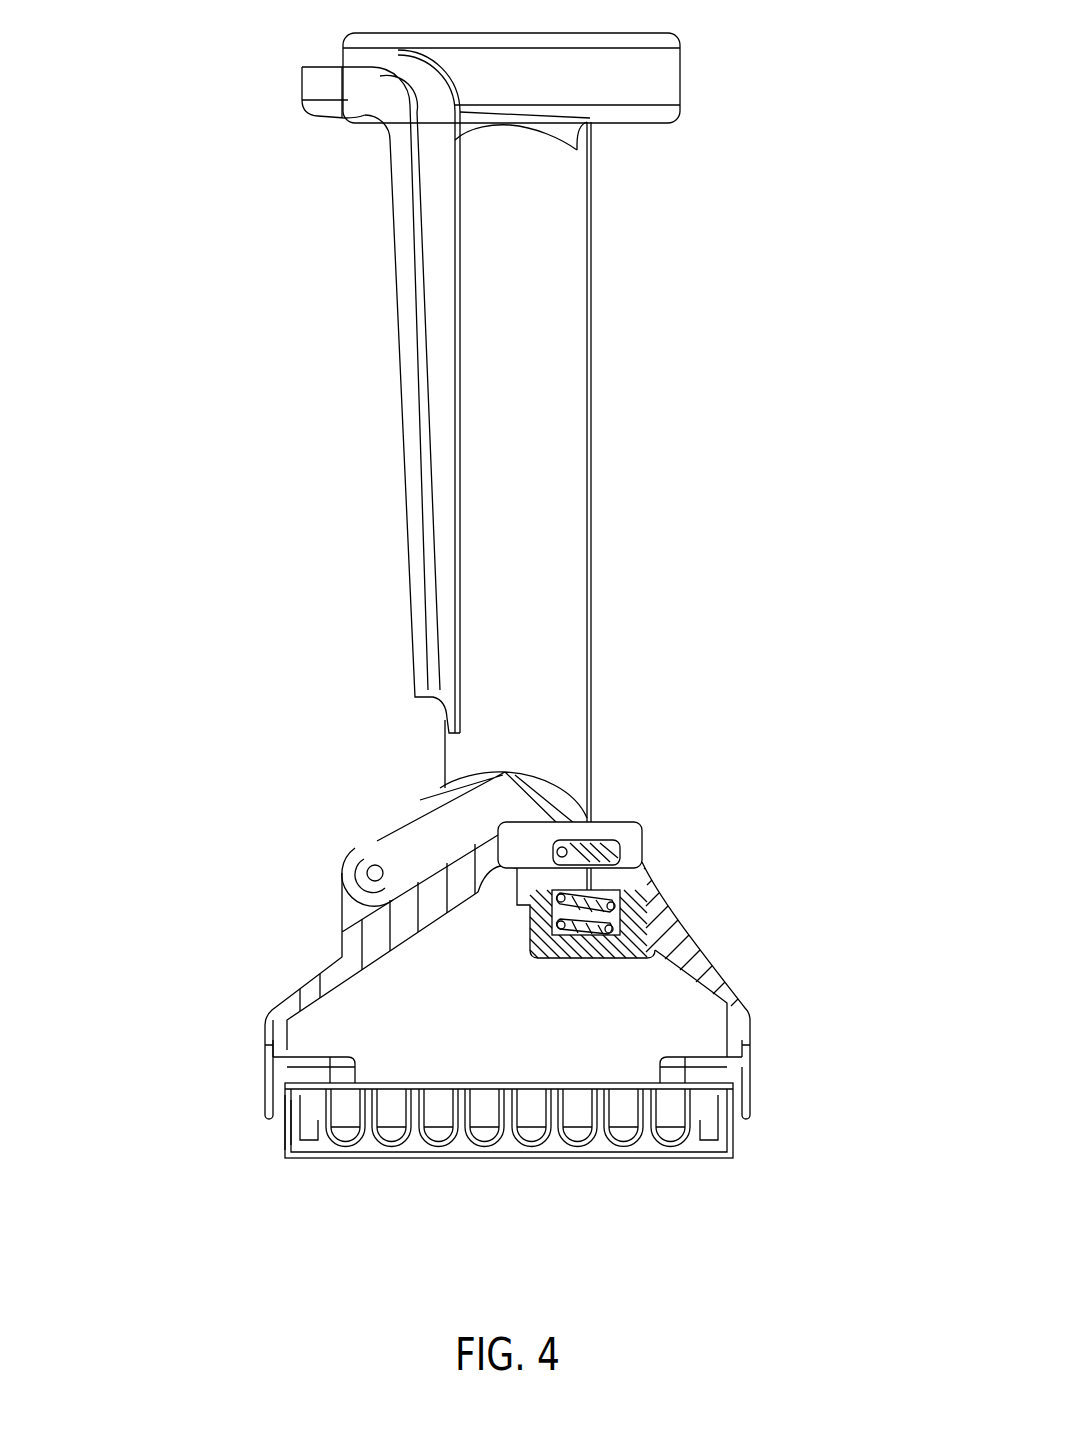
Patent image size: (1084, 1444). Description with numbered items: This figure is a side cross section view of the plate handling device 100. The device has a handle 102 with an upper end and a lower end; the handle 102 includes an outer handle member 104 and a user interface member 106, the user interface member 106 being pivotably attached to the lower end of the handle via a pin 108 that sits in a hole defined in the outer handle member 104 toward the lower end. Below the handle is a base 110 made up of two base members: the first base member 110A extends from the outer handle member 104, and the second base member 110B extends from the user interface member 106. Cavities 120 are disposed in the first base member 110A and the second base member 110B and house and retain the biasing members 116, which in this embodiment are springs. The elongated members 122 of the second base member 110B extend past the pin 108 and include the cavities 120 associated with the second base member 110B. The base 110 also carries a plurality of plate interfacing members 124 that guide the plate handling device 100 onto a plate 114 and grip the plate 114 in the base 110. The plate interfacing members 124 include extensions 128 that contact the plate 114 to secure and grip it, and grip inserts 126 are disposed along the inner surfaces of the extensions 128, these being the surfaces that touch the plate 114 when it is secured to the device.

The plate handling device 100 is at (828, 64).
The handle 102 is at (298, 238).
The outer handle member 104 is at (580, 416).
The user interface member 106 is at (392, 350).
The pin 108 is at (372, 866).
The base 110 is at (422, 981).
The first base member 110A is at (678, 927).
The second base member 110B is at (325, 965).
The plate 114 is at (738, 1160).
The biasing members 116 is at (590, 876).
The cavities 120 is at (592, 836).
The elongated members 122 is at (458, 848).
The plate interfacing members 124 is at (768, 1072).
The grip inserts 126 is at (289, 1103).
The extensions 128 is at (674, 1052).